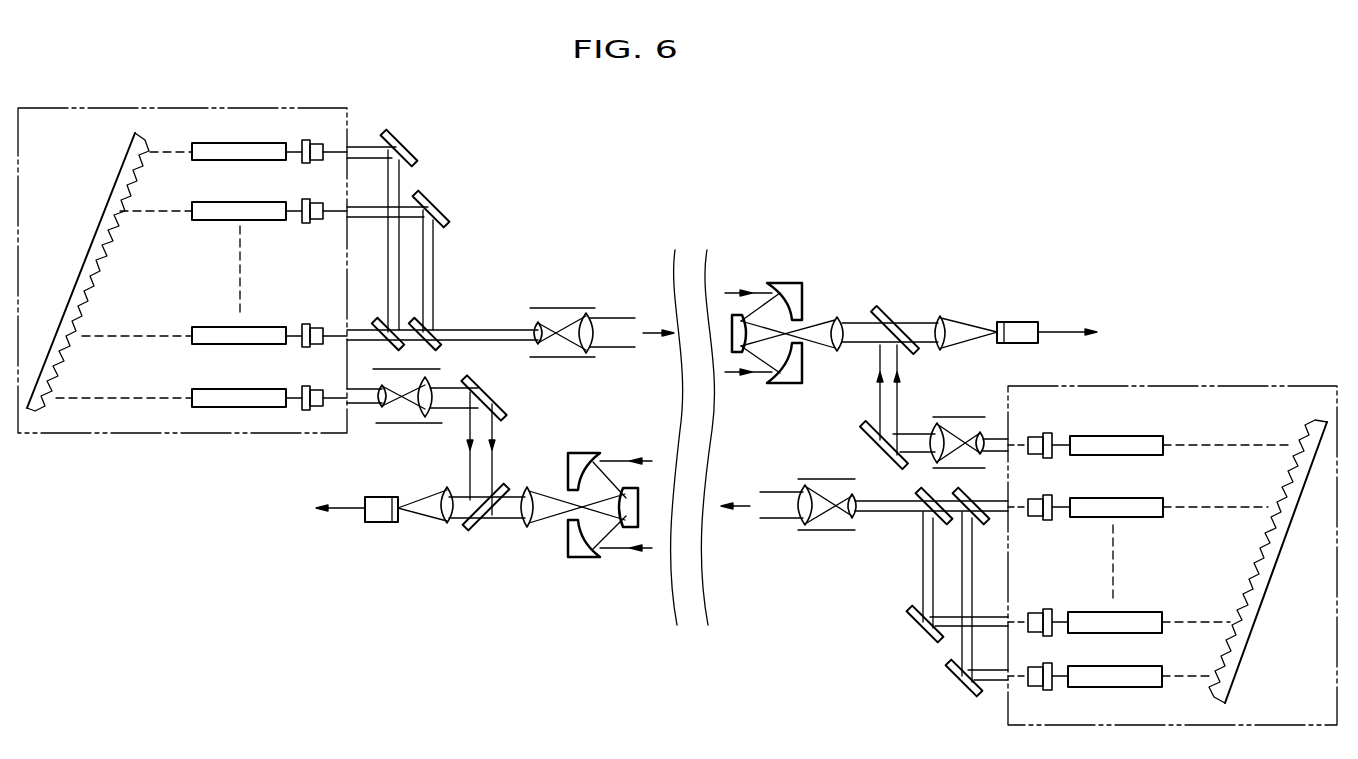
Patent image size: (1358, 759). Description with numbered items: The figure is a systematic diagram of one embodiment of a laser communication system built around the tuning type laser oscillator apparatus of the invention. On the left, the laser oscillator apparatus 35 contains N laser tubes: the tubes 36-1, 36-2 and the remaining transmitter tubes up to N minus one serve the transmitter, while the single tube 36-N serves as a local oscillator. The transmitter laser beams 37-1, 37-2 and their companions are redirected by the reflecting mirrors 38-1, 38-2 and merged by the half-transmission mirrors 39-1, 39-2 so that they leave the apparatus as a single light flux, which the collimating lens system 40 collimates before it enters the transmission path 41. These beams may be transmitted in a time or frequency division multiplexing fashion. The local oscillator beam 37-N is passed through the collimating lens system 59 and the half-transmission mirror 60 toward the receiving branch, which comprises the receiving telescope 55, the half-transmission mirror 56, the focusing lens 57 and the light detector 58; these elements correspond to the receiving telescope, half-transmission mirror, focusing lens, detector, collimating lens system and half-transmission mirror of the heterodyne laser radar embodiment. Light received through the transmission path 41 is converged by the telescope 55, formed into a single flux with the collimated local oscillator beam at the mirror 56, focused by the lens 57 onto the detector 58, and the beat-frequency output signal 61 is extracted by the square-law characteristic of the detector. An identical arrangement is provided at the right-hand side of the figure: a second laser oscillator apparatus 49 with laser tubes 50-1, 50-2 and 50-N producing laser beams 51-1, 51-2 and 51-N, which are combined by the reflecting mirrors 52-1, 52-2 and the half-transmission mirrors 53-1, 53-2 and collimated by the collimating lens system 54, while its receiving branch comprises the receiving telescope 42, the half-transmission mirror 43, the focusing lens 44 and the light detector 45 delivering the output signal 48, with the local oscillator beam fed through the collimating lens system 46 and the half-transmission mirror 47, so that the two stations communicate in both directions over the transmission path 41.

The tuning type laser oscillator apparatus 35 is at (238, 108).
The laser tube 36-1 is at (268, 143).
The laser tube 36-2 is at (270, 202).
The laser tube 36-N is at (235, 388).
The laser beam 37-1 is at (363, 147).
The laser beam 37-2 is at (360, 220).
The laser beam 37-N is at (361, 405).
The reflecting mirror 38-1 is at (402, 141).
The reflecting mirror 38-2 is at (433, 201).
The half-transmission mirror 39-1 is at (372, 343).
The half-transmission mirror 39-2 is at (437, 342).
The collimating lens system 40 is at (572, 308).
The transmission path 41 is at (690, 265).
The receiving telescope 42 is at (782, 283).
The beam splitter 43 is at (896, 306).
The focusing lens 44 is at (941, 316).
The detector 45 is at (1020, 322).
The lens system 46 is at (955, 416).
The mirror / beam splitter 47 is at (863, 436).
The detector output 48 is at (1055, 330).
The receiver laser module 49 is at (1197, 385).
The laser 50-N is at (1087, 436).
The laser 50-2 is at (1118, 612).
The laser 50-1 is at (1082, 688).
The laser beam output 51-N is at (1006, 448).
The laser beam output 51-2 is at (992, 617).
The laser beam output 51-1 is at (997, 680).
The mirror 52-1 is at (953, 676).
The mirror 52-2 is at (916, 630).
The beam splitter 53-1 is at (990, 520).
The beam splitter 53-2 is at (920, 492).
The beam expander lens system 54 is at (826, 532).
The receiving telescope 55 is at (597, 558).
The half-transmission mirror 56 is at (480, 528).
The focusing lens 57 is at (450, 524).
The light detector 58 is at (380, 523).
The collimating lens system 59 is at (408, 424).
The half-transmission mirror 60 is at (494, 394).
The detector output 61 is at (345, 509).